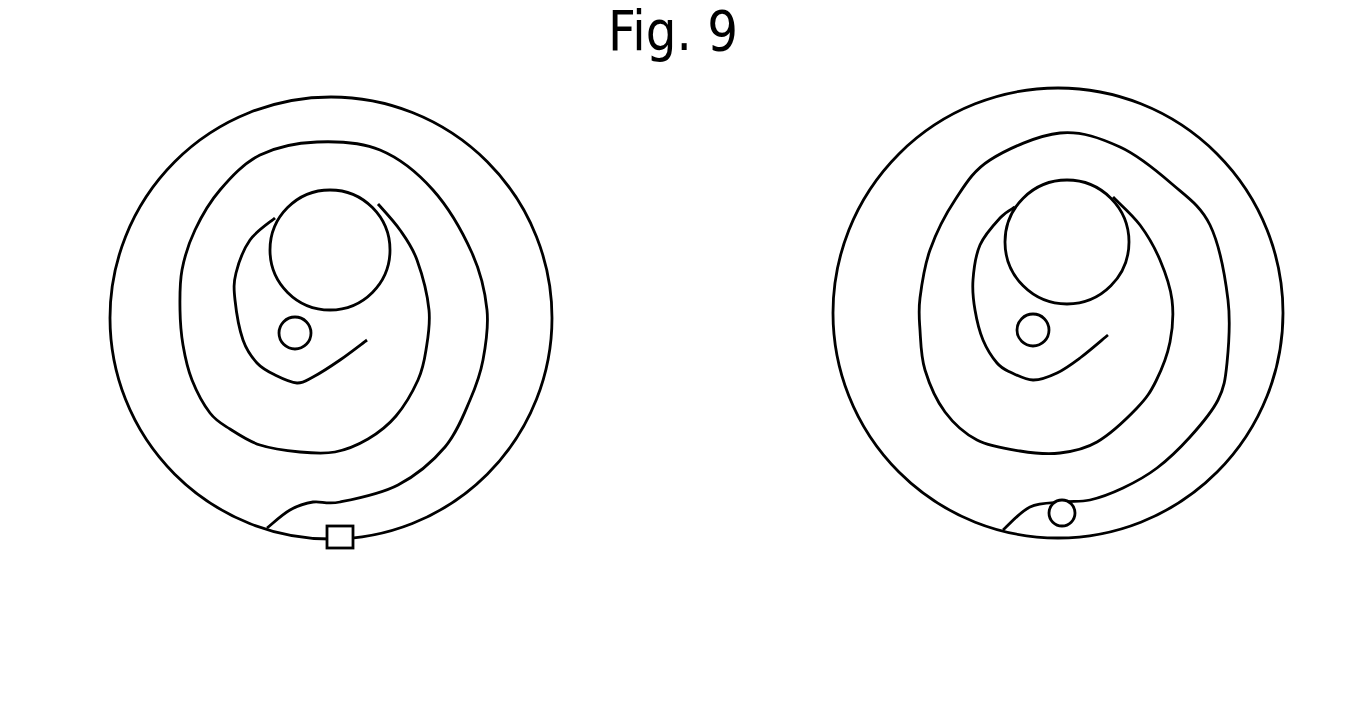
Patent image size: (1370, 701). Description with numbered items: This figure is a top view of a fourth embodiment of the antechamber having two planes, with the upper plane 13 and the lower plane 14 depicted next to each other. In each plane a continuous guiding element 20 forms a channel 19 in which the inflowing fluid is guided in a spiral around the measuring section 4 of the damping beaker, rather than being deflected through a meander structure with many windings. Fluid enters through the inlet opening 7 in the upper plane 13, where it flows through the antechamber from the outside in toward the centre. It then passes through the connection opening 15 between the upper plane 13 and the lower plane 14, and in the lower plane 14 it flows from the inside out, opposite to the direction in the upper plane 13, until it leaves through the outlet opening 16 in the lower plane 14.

The measuring section 4 is at (344, 236).
The inlet opening 7 is at (336, 534).
The upper plane 13 is at (449, 517).
The lower plane 14 is at (891, 477).
The connection opening 15 is at (299, 336).
The outlet opening 16 is at (1061, 521).
The channel 19 is at (157, 391).
The continuous guiding element 20 is at (471, 254).